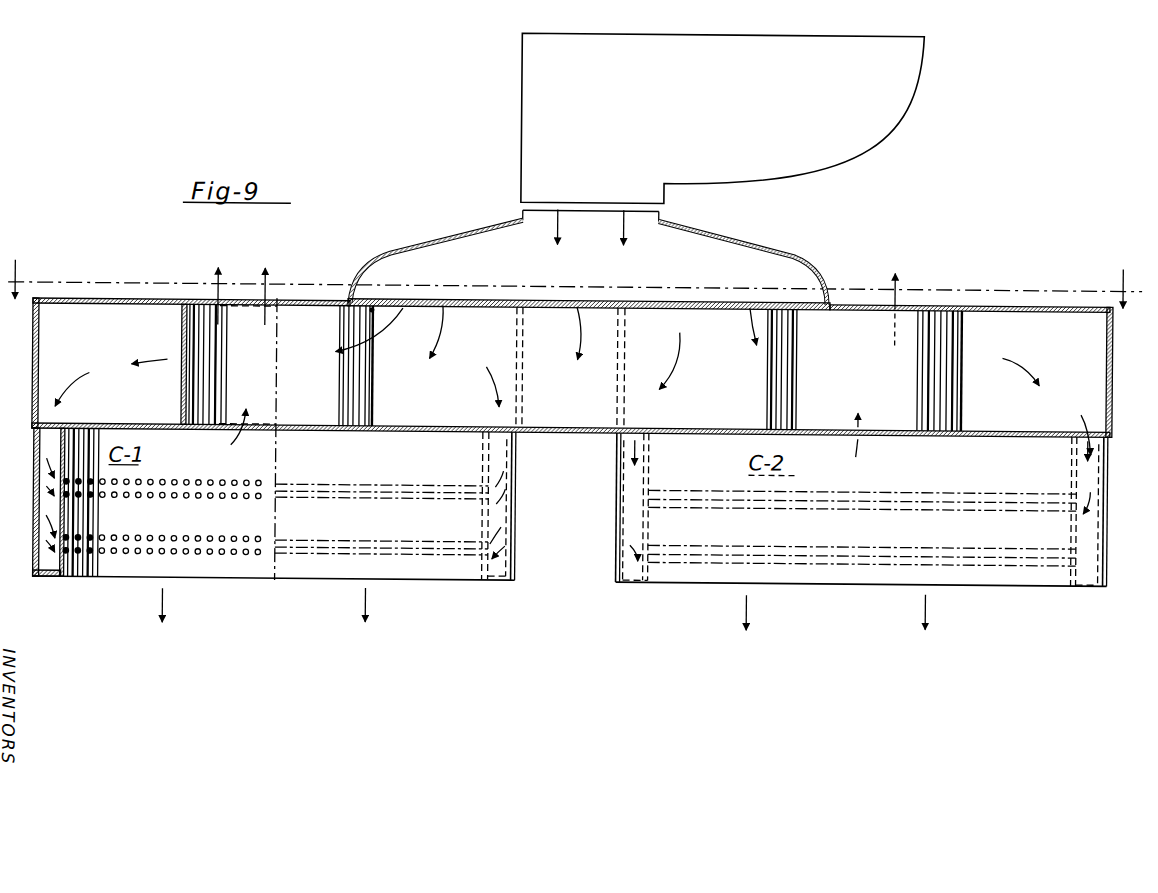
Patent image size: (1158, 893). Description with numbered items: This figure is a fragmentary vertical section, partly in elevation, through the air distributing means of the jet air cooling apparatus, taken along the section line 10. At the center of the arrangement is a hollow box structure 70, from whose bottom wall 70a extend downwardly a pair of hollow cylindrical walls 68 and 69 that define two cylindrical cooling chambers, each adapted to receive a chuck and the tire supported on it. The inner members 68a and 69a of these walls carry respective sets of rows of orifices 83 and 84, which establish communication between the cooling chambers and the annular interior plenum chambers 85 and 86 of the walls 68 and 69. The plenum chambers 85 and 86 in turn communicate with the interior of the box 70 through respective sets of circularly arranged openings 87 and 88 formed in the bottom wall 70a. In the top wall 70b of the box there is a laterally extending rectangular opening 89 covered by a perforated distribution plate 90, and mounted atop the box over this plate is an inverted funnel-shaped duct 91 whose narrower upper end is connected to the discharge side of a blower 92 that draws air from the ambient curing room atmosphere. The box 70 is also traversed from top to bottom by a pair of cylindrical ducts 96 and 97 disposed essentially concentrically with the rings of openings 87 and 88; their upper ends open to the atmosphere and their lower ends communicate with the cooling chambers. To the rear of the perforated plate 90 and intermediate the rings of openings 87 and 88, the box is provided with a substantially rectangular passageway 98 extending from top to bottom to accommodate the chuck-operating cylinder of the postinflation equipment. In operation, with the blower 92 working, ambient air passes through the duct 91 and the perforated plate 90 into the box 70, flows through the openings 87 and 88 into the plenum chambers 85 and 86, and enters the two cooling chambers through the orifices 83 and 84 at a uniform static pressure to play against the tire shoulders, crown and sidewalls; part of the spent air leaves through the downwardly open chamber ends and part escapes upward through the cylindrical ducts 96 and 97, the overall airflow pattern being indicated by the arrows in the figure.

The section line 10 is at (573, 302).
The hollow cylindrical wall 68 is at (502, 577).
The inner member of wall 68 68a is at (238, 568).
The hollow cylindrical wall 69 is at (1090, 580).
The inner member of wall 69 69a is at (651, 556).
The hollow box structure 70 is at (33, 405).
The bottom wall of box 70a is at (151, 423).
The top wall of box 70b is at (1031, 299).
The orifices 83 is at (228, 483).
The orifices 84 is at (1075, 490).
The annular plenum chamber 85 is at (40, 505).
The annular plenum chamber 86 is at (638, 516).
The circularly arranged openings 87 is at (54, 423).
The circularly arranged openings 88 is at (622, 436).
The rectangular opening 89 is at (370, 311).
The perforated distribution plate 90 is at (513, 295).
The inverted funnel-shaped duct 91 is at (745, 240).
The blower 92 is at (520, 152).
The cylindrical duct 96 is at (188, 348).
The cylindrical duct 97 is at (775, 376).
The rectangular passageway 98 is at (524, 391).